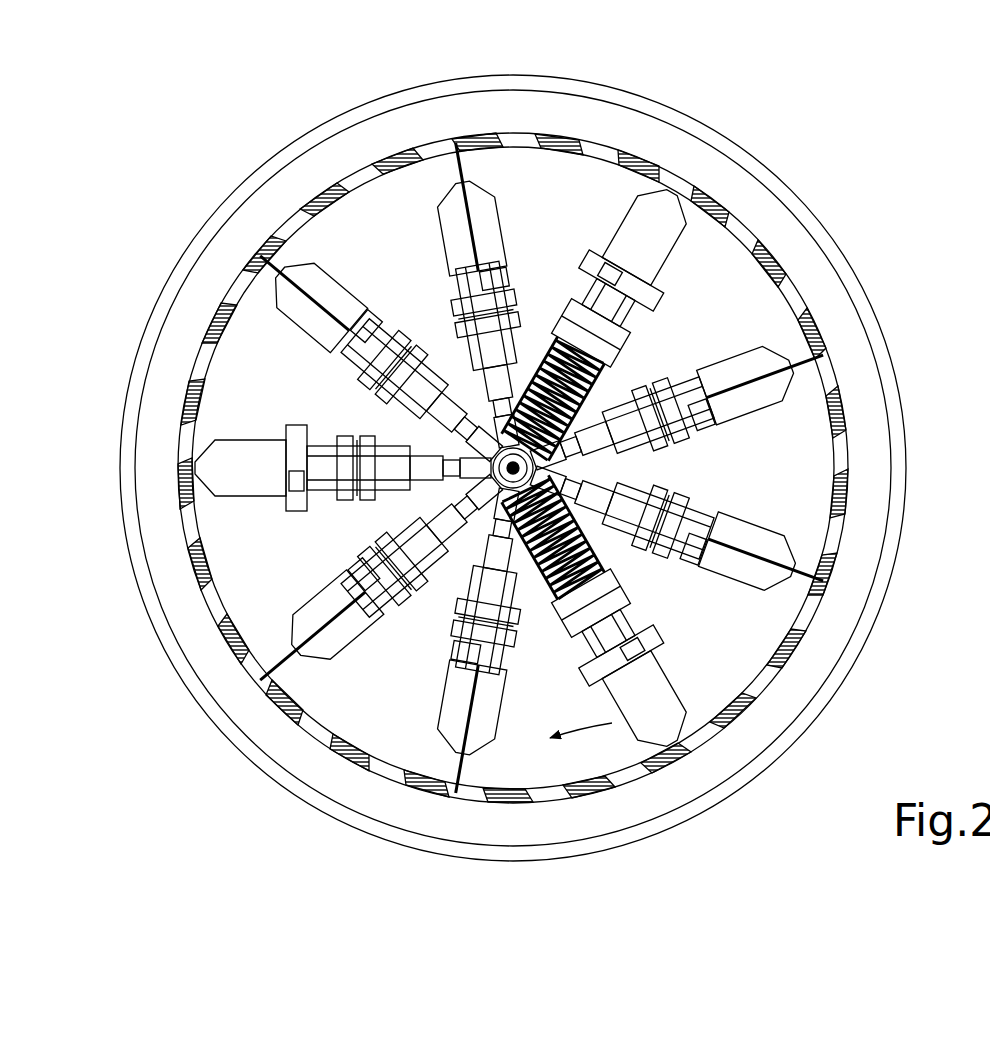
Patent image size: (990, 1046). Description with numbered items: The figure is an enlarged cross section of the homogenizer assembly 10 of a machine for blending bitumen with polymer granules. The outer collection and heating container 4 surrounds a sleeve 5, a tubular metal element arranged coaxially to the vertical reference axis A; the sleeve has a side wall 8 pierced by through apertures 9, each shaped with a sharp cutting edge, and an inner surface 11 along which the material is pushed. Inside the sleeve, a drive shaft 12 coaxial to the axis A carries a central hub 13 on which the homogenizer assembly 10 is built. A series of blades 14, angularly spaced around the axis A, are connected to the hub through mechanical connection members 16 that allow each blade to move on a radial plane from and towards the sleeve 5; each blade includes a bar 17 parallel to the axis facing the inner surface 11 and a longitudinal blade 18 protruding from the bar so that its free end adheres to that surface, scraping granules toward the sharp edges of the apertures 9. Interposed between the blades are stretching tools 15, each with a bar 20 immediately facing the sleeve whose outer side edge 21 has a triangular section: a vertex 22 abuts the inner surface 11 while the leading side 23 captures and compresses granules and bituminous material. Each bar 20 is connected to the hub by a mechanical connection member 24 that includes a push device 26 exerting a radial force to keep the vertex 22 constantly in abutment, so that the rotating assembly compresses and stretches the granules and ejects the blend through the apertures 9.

The collection and heating container 4 is at (907, 428).
The sleeve 5 is at (180, 393).
The side wall 8 is at (830, 400).
The through apertures 9 is at (187, 431).
The homogenizer assembly 10 is at (737, 307).
The inner surface 11 is at (826, 410).
The drive shaft 12 is at (475, 548).
The central hub 13 is at (676, 322).
The blades 14 is at (322, 256).
The stretching tools 15 is at (694, 229).
The mechanical connection member 16 is at (607, 556).
The bar 17 is at (450, 203).
The longitudinal blade 18 is at (457, 147).
The bar 20 is at (663, 202).
The outer side edge 21 is at (694, 728).
The vertex 22 is at (687, 758).
The side 23 is at (660, 748).
The mechanical connection member 24 is at (568, 300).
The push device 26 is at (684, 564).
The vertical reference axis A is at (513, 468).